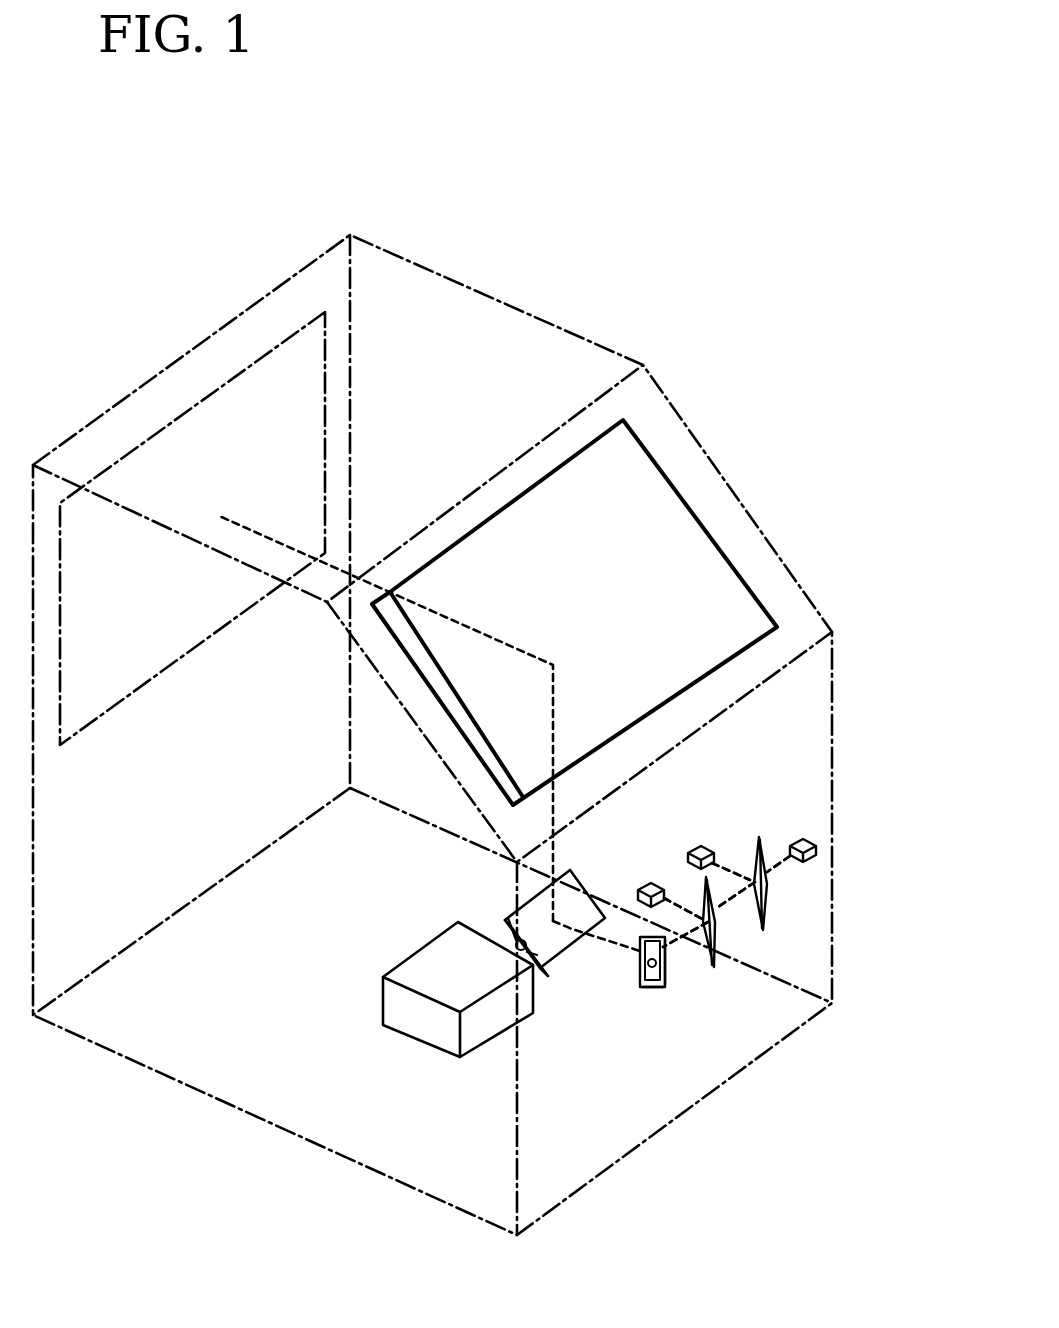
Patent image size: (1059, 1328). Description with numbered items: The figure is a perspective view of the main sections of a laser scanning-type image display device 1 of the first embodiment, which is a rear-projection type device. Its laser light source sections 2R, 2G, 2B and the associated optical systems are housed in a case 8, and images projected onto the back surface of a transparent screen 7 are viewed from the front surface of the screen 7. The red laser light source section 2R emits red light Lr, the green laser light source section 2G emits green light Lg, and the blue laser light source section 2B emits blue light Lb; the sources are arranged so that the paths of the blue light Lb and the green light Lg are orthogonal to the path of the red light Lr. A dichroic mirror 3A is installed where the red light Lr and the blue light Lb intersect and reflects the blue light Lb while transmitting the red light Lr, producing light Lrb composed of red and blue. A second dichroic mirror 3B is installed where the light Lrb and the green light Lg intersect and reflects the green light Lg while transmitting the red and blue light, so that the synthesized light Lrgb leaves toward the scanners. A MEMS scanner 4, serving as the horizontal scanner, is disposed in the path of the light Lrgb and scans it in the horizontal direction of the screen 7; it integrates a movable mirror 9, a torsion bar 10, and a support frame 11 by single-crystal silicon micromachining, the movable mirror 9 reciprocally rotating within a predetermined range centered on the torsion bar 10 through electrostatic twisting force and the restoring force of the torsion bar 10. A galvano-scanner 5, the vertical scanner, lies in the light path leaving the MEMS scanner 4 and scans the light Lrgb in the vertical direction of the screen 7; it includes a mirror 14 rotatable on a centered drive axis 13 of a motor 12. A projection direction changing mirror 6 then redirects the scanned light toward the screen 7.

The laser scanning-type image display device 1 is at (607, 266).
The blue laser light source section 2B is at (700, 847).
The green laser light source section 2G is at (643, 885).
The red laser light source section 2R is at (814, 855).
The dichroic mirror 3A is at (768, 903).
The dichroic mirror 3B is at (718, 942).
The MEMS scanner 4 is at (629, 991).
The galvano-scanner 5 is at (423, 1046).
The projection direction changing mirror 6 is at (668, 541).
The screen 7 is at (172, 418).
The case 8 is at (443, 343).
The movable mirror 9 is at (640, 970).
The torsion bar 10 is at (645, 990).
The support frame 11 is at (665, 972).
The motor 12 is at (438, 963).
The drive axis 13 is at (513, 940).
The mirror 14 is at (552, 938).
The red light Lr is at (789, 855).
The blue light Lb is at (736, 866).
The green light Lg is at (677, 900).
The light composed of red light and blue light Lrb is at (736, 916).
The synthesized light Lrgb is at (674, 948).